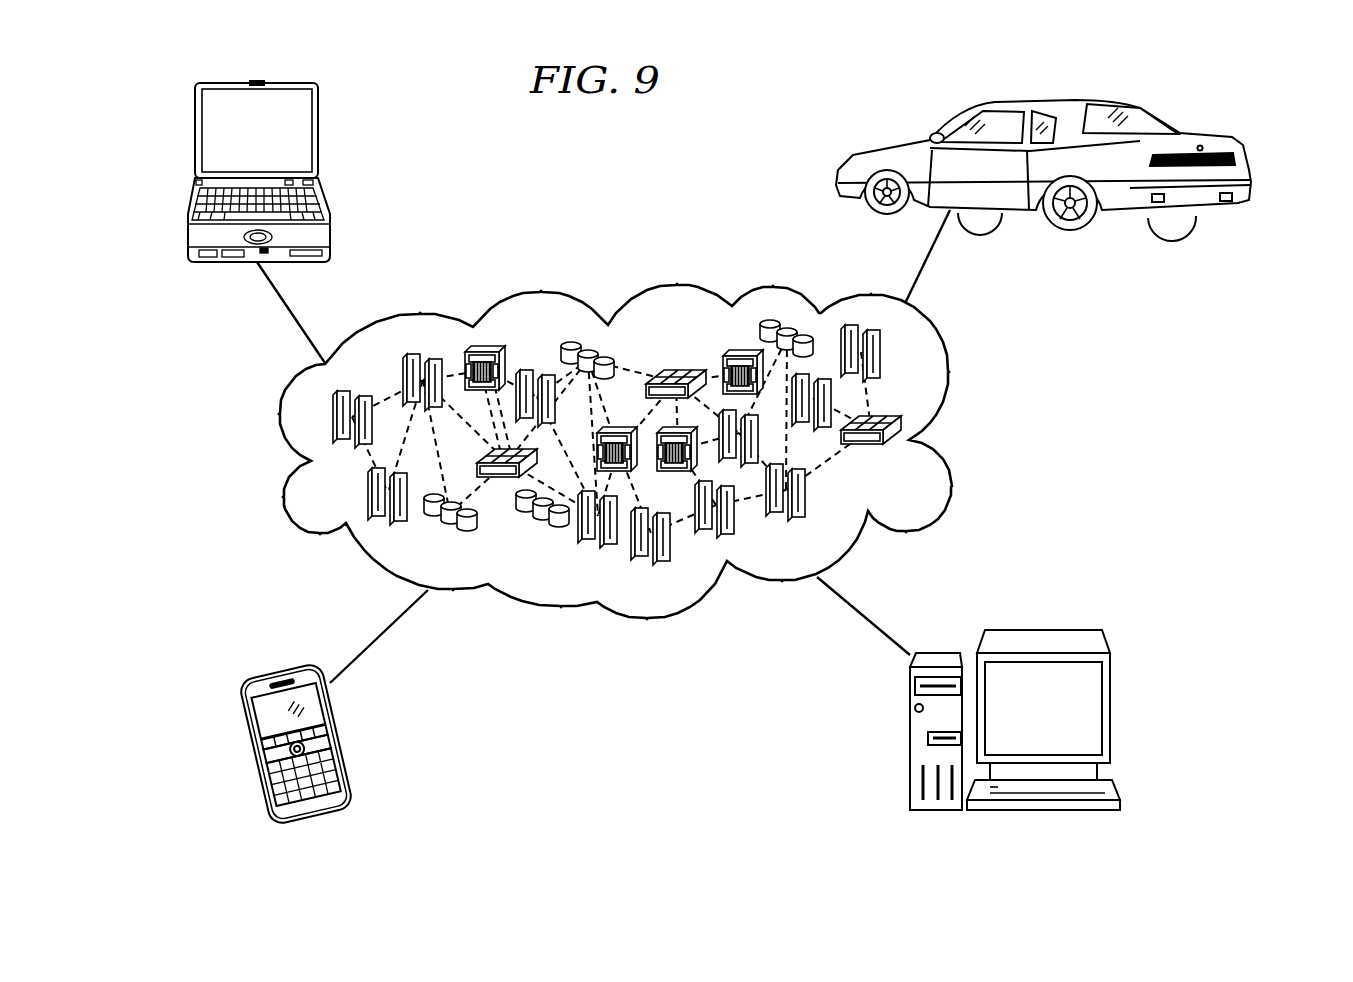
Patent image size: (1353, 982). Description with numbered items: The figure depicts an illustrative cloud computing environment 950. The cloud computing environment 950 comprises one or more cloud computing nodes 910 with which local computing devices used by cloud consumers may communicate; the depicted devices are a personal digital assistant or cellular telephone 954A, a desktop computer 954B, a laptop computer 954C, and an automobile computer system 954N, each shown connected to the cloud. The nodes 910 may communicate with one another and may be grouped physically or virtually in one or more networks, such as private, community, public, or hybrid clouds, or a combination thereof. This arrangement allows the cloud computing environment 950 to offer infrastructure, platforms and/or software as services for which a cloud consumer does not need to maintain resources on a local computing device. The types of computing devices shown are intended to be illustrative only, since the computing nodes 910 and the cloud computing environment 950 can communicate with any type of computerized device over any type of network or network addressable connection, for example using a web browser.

The cloud computing environment 950 is at (947, 373).
The cloud computing nodes 910 is at (906, 456).
The personal digital assistant (PDA) or cellular telephone 954A is at (242, 735).
The desktop computer 954B is at (1042, 628).
The laptop computer 954C is at (197, 125).
The automobile computer system 954N is at (1213, 133).